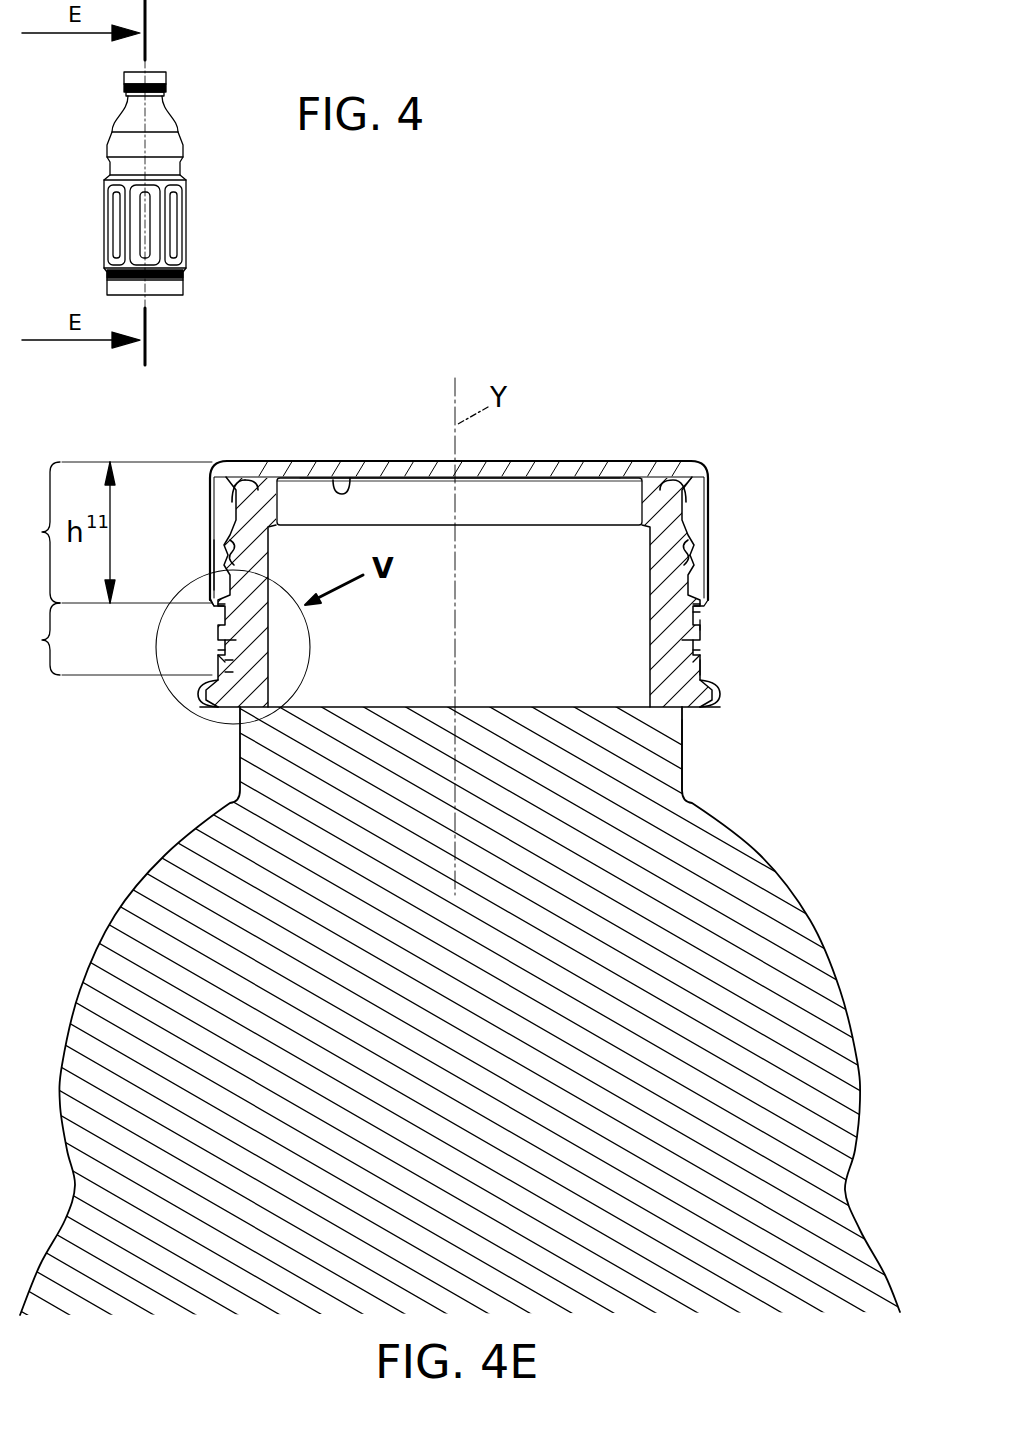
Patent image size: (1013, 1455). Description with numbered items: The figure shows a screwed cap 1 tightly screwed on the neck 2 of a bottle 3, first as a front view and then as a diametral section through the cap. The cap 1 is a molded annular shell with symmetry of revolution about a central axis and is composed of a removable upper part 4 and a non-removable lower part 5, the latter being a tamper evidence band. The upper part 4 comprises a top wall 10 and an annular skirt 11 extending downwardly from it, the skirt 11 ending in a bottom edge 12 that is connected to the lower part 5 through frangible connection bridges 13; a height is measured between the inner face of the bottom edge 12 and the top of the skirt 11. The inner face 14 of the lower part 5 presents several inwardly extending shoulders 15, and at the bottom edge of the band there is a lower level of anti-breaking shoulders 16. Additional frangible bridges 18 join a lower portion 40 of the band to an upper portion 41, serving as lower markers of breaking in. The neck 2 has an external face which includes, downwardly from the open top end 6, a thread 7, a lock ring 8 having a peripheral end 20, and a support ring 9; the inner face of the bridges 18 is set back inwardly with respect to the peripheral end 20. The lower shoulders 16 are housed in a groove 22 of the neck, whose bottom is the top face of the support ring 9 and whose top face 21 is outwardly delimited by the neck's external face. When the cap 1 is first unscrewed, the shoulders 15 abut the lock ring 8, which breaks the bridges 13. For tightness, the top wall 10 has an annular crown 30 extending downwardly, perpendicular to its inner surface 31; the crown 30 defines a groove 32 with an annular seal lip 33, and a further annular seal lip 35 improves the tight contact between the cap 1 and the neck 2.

In FIG. 4, the screwed cap 1 is at (165, 62).
In FIG. 4E, the screwed cap 1 is at (672, 435).
In FIG. 4E, the neck 2 is at (663, 583).
In FIG. 4, the bottle 3 is at (195, 210).
In FIG. 4E, the bottle 3 is at (790, 875).
In FIG. 4E, the upper part 4 is at (112, 532).
In FIG. 4E, the lower part 5 is at (115, 639).
In FIG. 4E, the open top end 6 is at (490, 540).
In FIG. 4E, the thread 7 is at (228, 562).
In FIG. 4E, the lock ring 8 is at (703, 618).
In FIG. 4E, the support ring 9 is at (713, 707).
In FIG. 4E, the top wall 10 is at (397, 461).
In FIG. 4E, the skirt 11 is at (210, 565).
In FIG. 4E, the bottom edge 12 is at (207, 598).
In FIG. 4E, the frangible connection bridges 13 is at (217, 608).
In FIG. 4E, the inner face 14 is at (238, 640).
In FIG. 4E, the shoulders 15 is at (220, 650).
In FIG. 4E, the lower shoulders 16 is at (242, 680).
In FIG. 4E, the additional frangible bridges 18 is at (230, 655).
In FIG. 4E, the peripheral end 20 is at (222, 608).
In FIG. 4E, the top face 21 is at (240, 666).
In FIG. 4E, the groove 22 is at (240, 678).
In FIG. 4E, the annular crown 30 is at (645, 490).
In FIG. 4E, the inner surface 31 is at (350, 478).
In FIG. 4E, the groove 32 is at (677, 490).
In FIG. 4E, the annular seal lip 33 is at (238, 500).
In FIG. 4E, the annular seal lip 35 is at (252, 480).
In FIG. 4E, the lower portion 40 is at (710, 667).
In FIG. 4E, the upper portion 41 is at (710, 625).